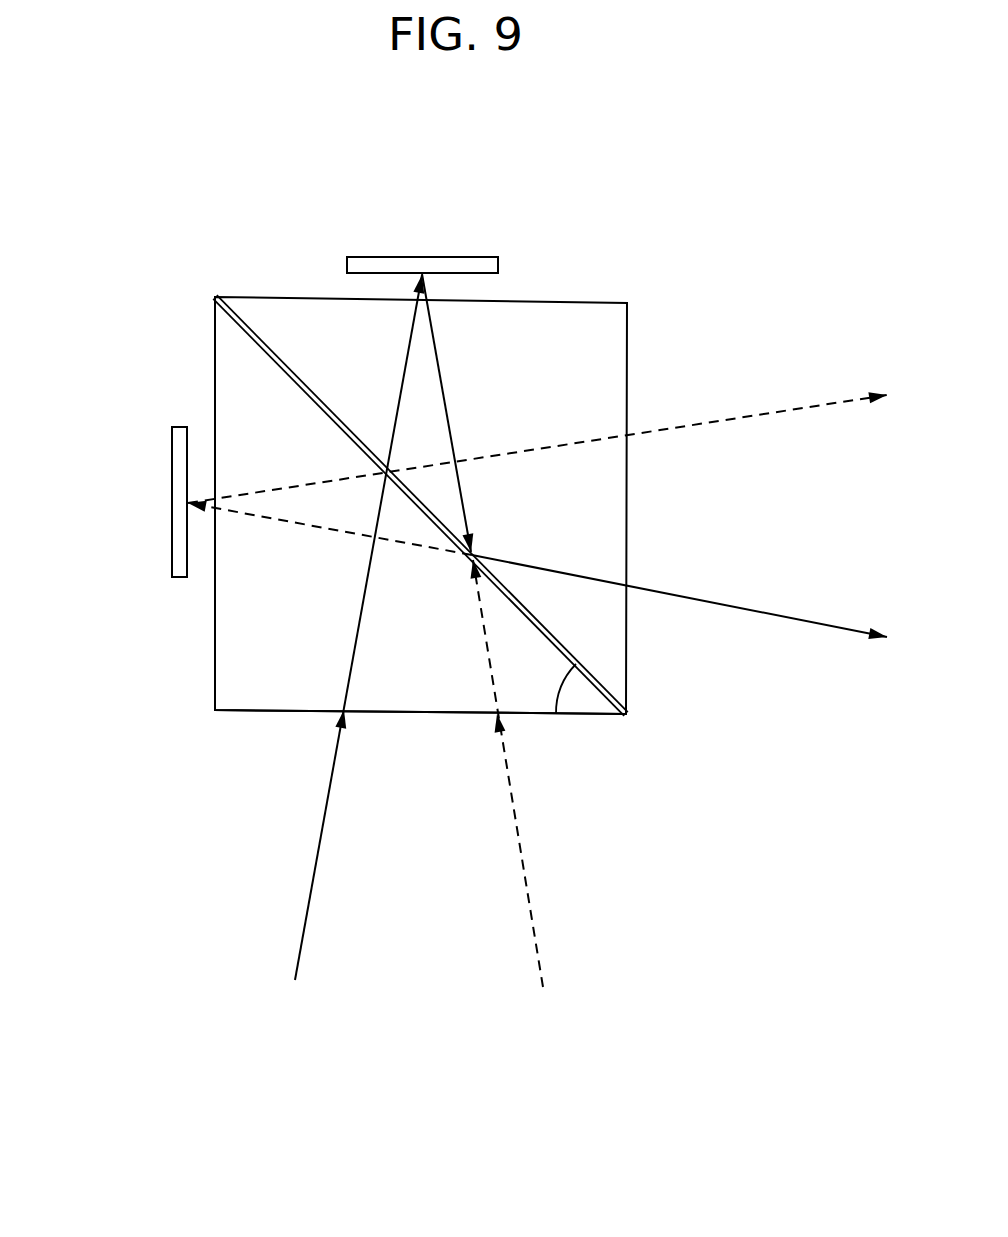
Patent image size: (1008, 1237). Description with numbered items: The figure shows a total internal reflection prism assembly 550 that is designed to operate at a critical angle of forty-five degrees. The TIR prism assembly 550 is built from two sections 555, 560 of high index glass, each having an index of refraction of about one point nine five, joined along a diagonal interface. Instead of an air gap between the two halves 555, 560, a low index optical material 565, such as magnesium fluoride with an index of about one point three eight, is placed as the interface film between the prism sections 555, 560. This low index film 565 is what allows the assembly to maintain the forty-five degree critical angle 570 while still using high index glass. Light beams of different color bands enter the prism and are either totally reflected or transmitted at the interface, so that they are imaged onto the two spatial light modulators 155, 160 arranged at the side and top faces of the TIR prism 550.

The TIR prism assembly 550 is at (662, 901).
The first prism section 555 is at (587, 374).
The second prism section 560 is at (243, 395).
The low index optical material 565 is at (263, 340).
The critical angle 570 is at (580, 705).
The spatial light modulator 160 is at (447, 257).
The spatial light modulator 155 is at (172, 537).